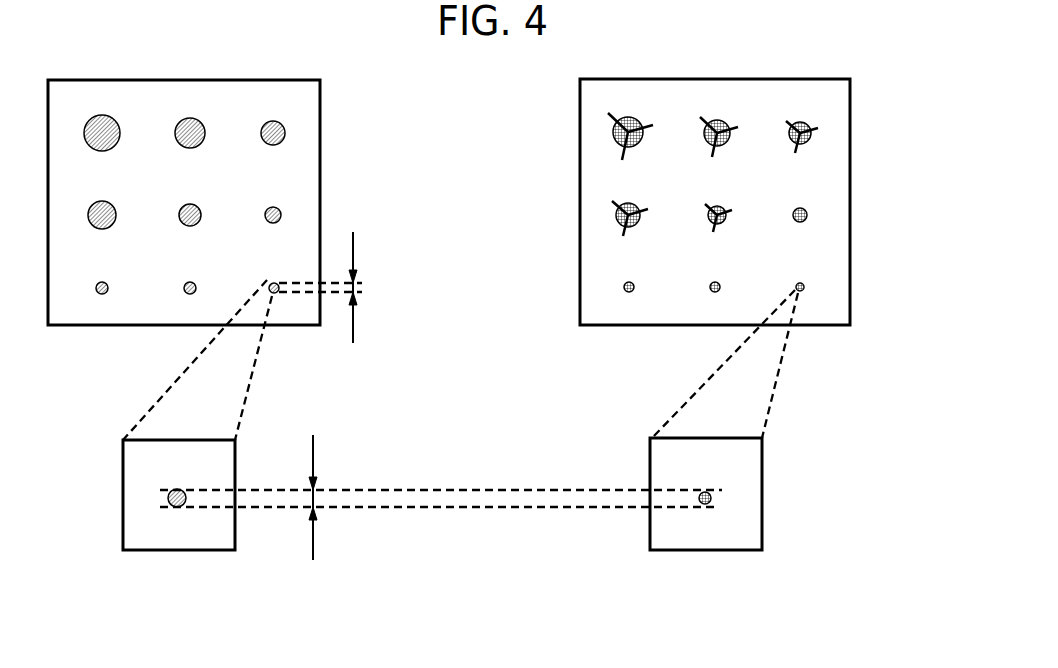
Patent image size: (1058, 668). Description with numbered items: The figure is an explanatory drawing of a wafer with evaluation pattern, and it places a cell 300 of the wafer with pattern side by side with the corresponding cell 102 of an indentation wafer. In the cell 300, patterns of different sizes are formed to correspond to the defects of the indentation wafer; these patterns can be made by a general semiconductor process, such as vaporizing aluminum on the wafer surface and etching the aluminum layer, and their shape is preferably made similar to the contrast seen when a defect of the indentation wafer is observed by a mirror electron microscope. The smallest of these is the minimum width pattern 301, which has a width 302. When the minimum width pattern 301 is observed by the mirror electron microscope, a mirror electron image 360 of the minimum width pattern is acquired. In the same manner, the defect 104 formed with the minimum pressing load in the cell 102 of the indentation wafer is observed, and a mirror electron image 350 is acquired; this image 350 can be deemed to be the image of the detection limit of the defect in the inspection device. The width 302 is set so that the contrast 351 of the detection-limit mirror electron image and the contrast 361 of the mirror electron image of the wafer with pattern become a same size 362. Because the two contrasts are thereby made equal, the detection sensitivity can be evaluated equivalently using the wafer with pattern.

The cell of wafer with pattern 300 is at (320, 100).
The minimum width pattern 301 is at (277, 293).
The width of the minimum width pattern 302 is at (363, 292).
The mirror electron image of the minimum width pattern 360 is at (123, 445).
The contrast of mirror electron image of the wafer with pattern 361 is at (166, 497).
The same size 362 is at (318, 497).
The cell of indentation wafer 102 is at (850, 105).
The defect formed with minimum pressing load 104 is at (804, 285).
The mirror electron image of detection limit 350 is at (762, 450).
The contrast of mirror electron image of the detection limit 351 is at (718, 500).